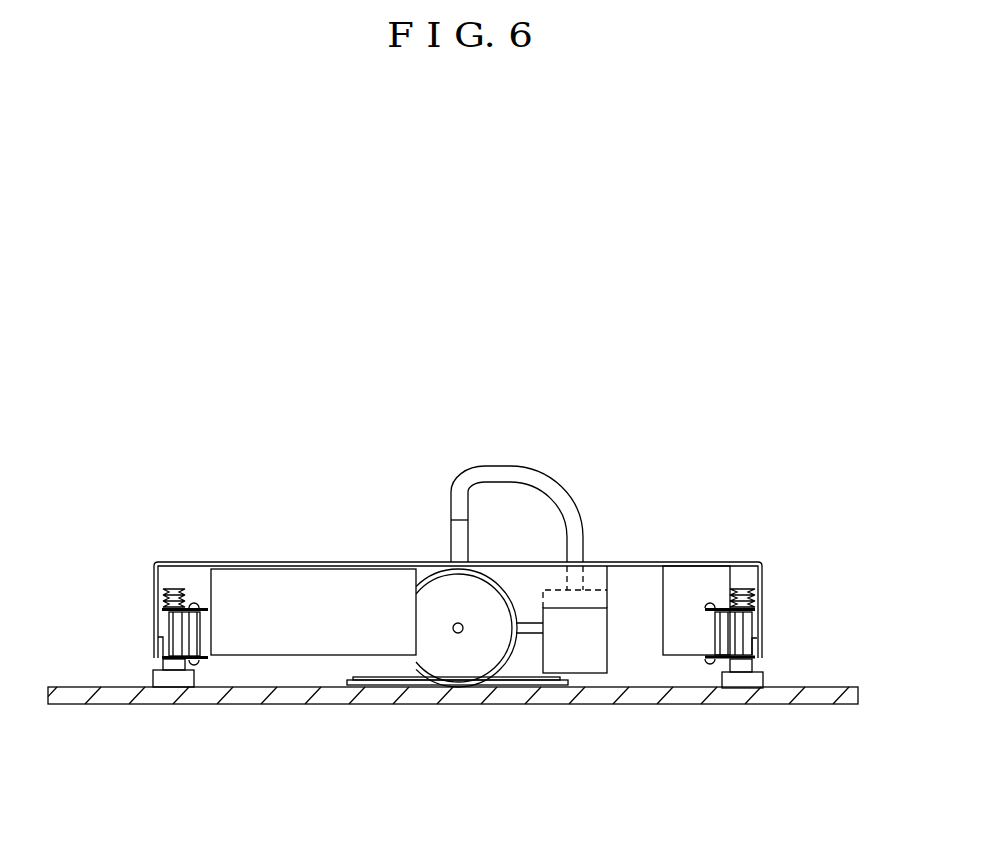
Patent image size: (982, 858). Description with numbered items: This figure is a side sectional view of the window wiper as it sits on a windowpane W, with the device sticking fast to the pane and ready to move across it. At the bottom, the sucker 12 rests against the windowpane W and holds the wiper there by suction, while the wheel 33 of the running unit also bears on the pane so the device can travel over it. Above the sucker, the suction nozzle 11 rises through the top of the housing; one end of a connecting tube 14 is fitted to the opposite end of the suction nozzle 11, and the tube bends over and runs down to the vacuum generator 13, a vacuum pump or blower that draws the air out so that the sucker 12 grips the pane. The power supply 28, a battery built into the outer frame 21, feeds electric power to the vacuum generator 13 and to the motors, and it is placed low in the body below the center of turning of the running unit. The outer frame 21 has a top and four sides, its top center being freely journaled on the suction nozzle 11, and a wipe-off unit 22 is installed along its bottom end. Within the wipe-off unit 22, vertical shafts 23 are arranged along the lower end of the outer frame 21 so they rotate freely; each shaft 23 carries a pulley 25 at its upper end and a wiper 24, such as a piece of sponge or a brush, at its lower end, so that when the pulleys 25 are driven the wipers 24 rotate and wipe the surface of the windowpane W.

The suction nozzle 11 is at (455, 547).
The sucker 12 is at (380, 690).
The vacuum generator 13 is at (598, 662).
The connecting tube 14 is at (517, 475).
The outer frame 21 is at (647, 565).
The wipe-off unit 22 is at (774, 571).
The shaft 23 is at (172, 622).
The wiper 24 is at (165, 680).
The pulley 25 is at (173, 588).
The power supply 28 is at (297, 637).
The wheel 33 is at (462, 665).
The windowpane W is at (778, 693).